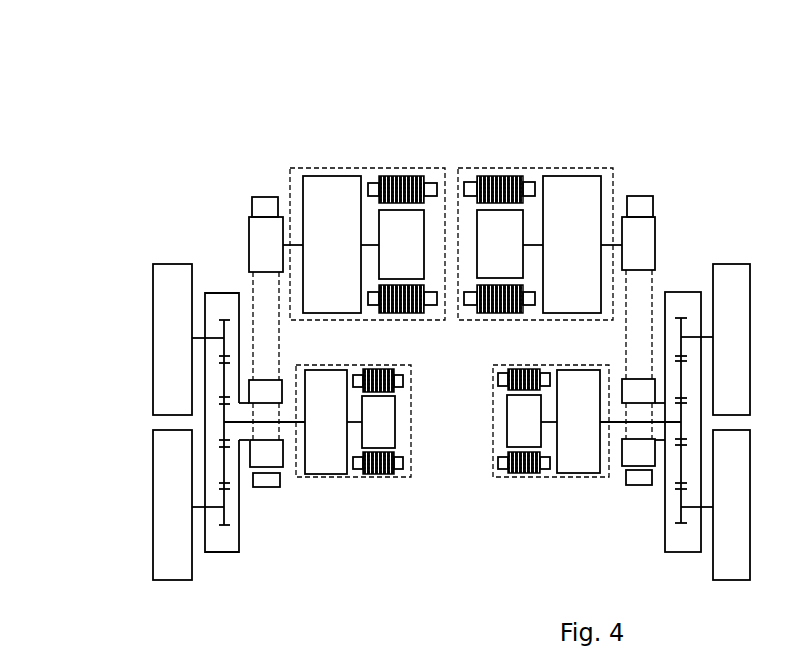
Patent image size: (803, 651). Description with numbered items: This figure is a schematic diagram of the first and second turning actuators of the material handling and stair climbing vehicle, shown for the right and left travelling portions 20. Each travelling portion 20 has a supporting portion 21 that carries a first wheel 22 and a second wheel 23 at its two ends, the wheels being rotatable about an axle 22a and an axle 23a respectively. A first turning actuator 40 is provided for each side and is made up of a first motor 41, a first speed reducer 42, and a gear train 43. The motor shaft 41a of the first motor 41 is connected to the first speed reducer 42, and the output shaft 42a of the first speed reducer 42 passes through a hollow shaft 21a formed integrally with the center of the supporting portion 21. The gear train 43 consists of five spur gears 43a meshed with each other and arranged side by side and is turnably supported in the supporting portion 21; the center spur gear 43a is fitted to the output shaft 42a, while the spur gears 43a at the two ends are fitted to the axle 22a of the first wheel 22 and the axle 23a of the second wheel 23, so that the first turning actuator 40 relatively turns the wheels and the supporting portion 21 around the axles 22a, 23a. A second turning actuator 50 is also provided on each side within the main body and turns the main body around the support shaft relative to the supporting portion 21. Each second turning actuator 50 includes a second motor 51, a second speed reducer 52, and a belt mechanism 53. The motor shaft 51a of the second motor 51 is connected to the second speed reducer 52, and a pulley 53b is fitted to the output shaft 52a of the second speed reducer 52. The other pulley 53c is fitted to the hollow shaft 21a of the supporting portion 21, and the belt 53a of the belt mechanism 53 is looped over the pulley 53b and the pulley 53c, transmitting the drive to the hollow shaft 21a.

The travelling portion 20 is at (82, 292).
The supporting portion 21 is at (207, 377).
The hollow shaft 21a is at (246, 402).
The first wheel 22 is at (163, 403).
The axle 22a is at (200, 339).
The second wheel 23 is at (163, 452).
The axle 23a is at (200, 507).
The first turning actuator 40 is at (588, 479).
The first motor 41 is at (397, 427).
The motor shaft 41a is at (353, 425).
The first speed reducer 42 is at (333, 465).
The output shaft 42a is at (283, 430).
The gear train 43 is at (243, 532).
The spur gear 43a is at (227, 497).
The second turning actuator 50 is at (590, 113).
The second motor 51 is at (412, 233).
The motor shaft 51a is at (372, 242).
The second speed reducer 52 is at (348, 210).
The output shaft 52a is at (285, 215).
The belt mechanism 53 is at (412, 283).
The belt 53a is at (277, 303).
The pulley 53b is at (258, 230).
The pulley 53c is at (278, 390).